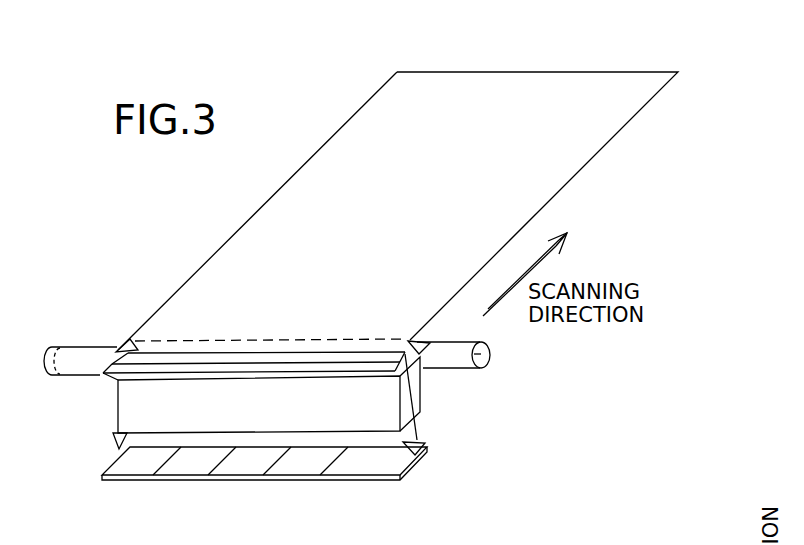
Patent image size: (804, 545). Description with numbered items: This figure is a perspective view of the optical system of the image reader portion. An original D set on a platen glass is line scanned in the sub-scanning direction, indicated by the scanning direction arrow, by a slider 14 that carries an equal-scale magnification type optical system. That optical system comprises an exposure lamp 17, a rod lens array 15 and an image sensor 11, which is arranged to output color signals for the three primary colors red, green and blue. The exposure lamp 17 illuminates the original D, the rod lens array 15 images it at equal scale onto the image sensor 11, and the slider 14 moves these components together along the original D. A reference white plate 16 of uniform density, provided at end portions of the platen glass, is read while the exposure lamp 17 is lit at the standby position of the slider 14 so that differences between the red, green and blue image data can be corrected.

The original D is at (610, 130).
The image sensor 11 is at (172, 482).
The slider 14 is at (535, 435).
The rod lens array 15 is at (413, 400).
The reference white plate 16 is at (108, 376).
The exposure lamp 17 is at (492, 343).